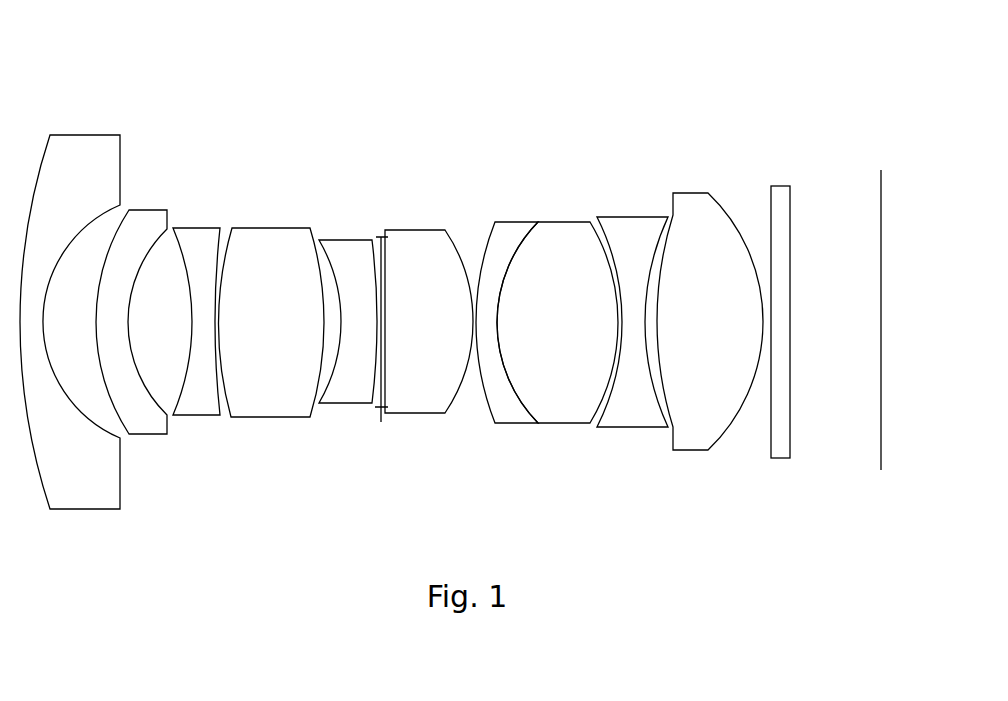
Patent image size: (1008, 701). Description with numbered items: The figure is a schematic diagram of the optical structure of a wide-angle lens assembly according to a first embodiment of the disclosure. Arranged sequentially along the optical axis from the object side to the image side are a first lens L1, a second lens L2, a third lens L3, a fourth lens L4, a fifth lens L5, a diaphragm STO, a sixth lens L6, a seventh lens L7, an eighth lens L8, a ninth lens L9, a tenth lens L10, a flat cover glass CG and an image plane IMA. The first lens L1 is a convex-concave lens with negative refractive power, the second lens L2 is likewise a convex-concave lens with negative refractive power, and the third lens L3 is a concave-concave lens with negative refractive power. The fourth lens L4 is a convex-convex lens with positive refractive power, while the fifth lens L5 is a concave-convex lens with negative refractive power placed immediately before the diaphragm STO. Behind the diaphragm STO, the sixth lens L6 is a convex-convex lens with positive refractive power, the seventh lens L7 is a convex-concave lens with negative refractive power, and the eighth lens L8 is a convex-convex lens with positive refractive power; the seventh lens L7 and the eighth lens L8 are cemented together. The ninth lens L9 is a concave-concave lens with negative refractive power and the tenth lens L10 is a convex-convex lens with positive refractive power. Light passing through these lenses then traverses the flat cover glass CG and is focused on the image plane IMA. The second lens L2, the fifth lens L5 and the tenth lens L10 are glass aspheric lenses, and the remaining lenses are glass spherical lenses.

The first lens L1 is at (97, 162).
The second lens L2 is at (148, 225).
The third lens L3 is at (198, 238).
The fourth lens L4 is at (268, 250).
The fifth lens L5 is at (340, 250).
The diaphragm STO is at (381, 237).
The sixth lens L6 is at (426, 255).
The seventh lens L7 is at (515, 238).
The eighth lens L8 is at (569, 243).
The ninth lens L9 is at (640, 242).
The tenth lens L10 is at (696, 222).
The flat cover glass CG is at (782, 207).
The image plane IMA is at (880, 305).